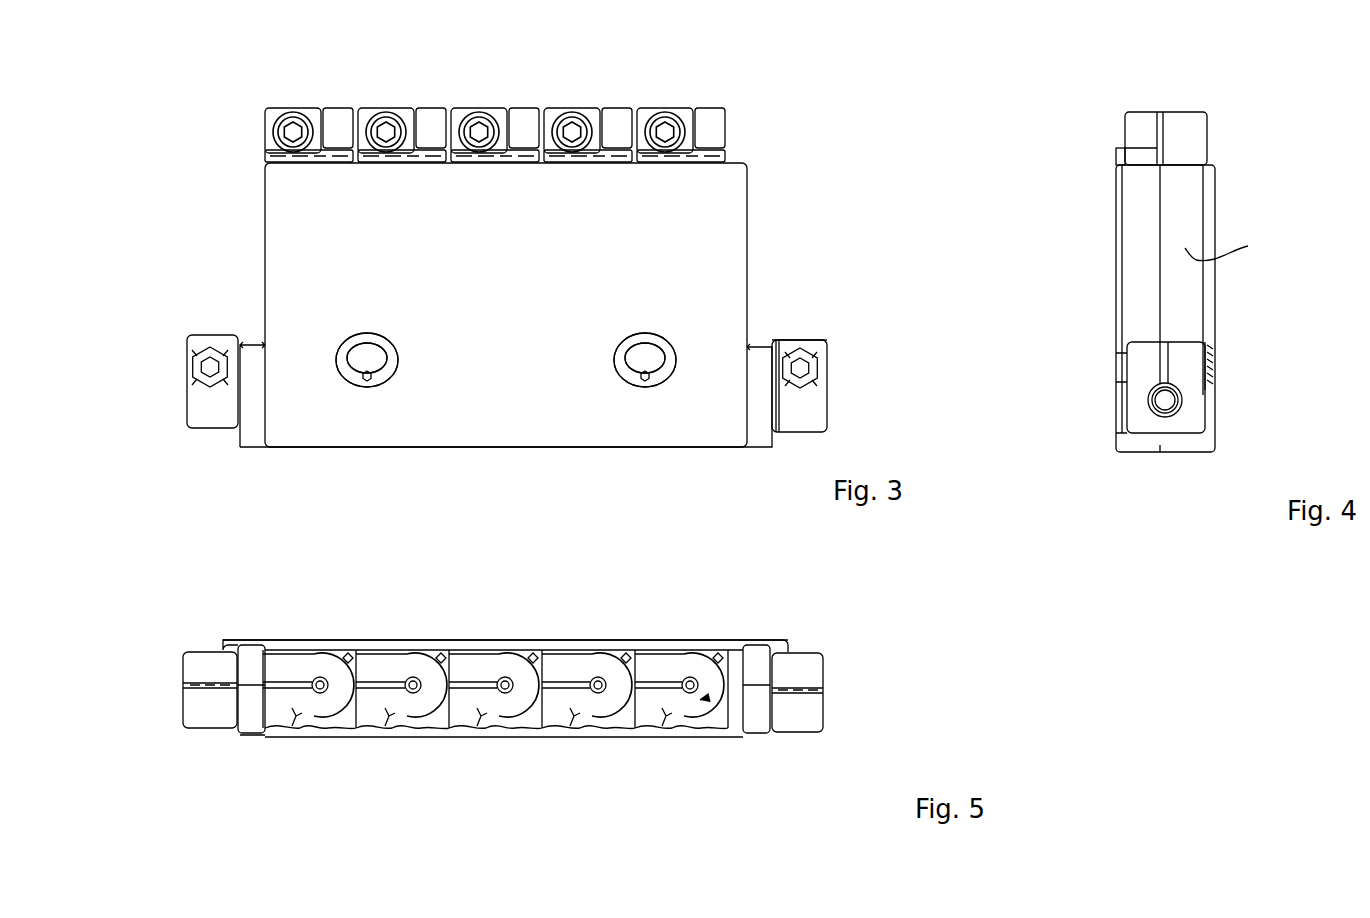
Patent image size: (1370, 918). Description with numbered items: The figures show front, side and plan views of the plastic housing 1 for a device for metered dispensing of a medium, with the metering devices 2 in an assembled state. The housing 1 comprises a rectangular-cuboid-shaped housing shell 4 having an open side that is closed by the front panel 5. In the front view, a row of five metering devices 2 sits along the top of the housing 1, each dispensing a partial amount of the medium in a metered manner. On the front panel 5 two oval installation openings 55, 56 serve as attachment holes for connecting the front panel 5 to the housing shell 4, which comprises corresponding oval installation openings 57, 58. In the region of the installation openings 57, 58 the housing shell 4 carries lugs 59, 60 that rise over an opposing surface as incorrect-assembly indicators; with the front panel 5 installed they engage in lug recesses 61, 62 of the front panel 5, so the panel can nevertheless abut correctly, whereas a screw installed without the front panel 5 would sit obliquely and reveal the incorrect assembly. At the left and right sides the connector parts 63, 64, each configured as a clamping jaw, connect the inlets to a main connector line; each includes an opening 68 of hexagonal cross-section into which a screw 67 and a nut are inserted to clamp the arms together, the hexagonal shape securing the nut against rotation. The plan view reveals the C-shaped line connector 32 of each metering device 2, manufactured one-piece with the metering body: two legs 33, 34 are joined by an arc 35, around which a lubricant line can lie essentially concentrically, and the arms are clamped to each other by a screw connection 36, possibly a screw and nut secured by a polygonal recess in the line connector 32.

In FIG. 3, the housing 1 is at (510, 302).
In FIG. 4, the housing 1 is at (1212, 241).
In FIG. 5, the housing 1 is at (497, 687).
In FIG. 3, the metering device 2 is at (704, 130).
In FIG. 4, the metering device 2 is at (1178, 130).
In FIG. 4, the housing shell 4 is at (1180, 204).
In FIG. 3, the front panel 5 is at (672, 246).
In FIG. 5, the line connector 32 is at (708, 710).
In FIG. 5, the leg 33 is at (652, 664).
In FIG. 5, the leg 34 is at (650, 710).
In FIG. 5, the arc 35 is at (698, 674).
In FIG. 3, the screw connection 36 is at (674, 118).
In FIG. 5, the screw connection 36 is at (674, 694).
In FIG. 3, the installation opening 55 is at (367, 360).
In FIG. 3, the installation opening 56 is at (645, 360).
In FIG. 3, the installation opening 57 is at (368, 358).
In FIG. 3, the installation opening 58 is at (646, 358).
In FIG. 3, the lug 59 is at (367, 358).
In FIG. 3, the lug 60 is at (645, 358).
In FIG. 3, the lug recess 61 is at (648, 380).
In FIG. 3, the lug recess 62 is at (367, 382).
In FIG. 3, the connector part 63 is at (206, 405).
In FIG. 5, the connector part 63 is at (206, 666).
In FIG. 3, the connector part 64 is at (810, 412).
In FIG. 4, the connector part 64 is at (1188, 370).
In FIG. 5, the connector part 64 is at (800, 667).
In FIG. 3, the screw 67 is at (800, 348).
In FIG. 3, the opening 68 is at (832, 350).